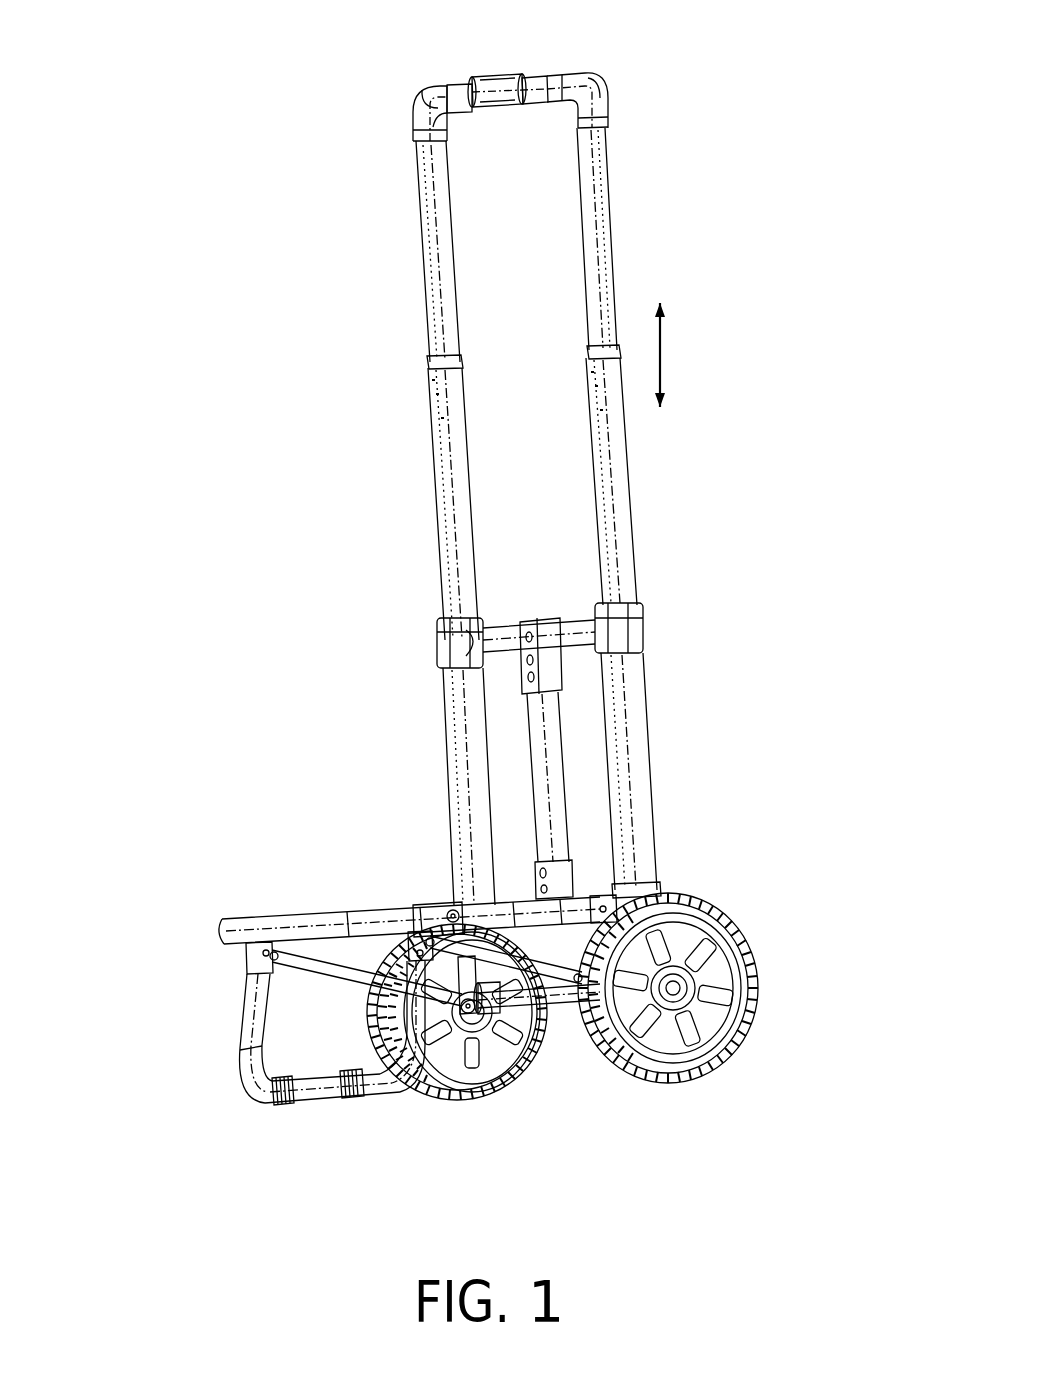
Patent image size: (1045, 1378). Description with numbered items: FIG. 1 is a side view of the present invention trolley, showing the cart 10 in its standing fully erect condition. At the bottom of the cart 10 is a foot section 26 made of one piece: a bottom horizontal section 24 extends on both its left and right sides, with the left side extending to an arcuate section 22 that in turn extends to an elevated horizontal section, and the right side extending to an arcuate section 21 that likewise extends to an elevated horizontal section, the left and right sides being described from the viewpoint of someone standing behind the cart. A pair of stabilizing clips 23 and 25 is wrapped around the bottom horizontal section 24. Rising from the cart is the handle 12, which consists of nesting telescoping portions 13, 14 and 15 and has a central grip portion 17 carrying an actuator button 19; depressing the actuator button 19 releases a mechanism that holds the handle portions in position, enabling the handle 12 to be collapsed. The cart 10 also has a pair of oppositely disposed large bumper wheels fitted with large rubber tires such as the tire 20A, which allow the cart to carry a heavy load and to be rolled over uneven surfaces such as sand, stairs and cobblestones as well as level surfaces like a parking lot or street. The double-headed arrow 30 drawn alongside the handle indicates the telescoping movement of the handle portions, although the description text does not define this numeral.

The cart 10 is at (337, 597).
The handle 12 is at (585, 350).
The telescoping portion 13 is at (653, 768).
The telescoping portion 14 is at (647, 505).
The telescoping portion 15 is at (615, 258).
The central grip portion 17 is at (592, 95).
The actuator button 19 is at (522, 72).
The large rubber tire 20A is at (712, 970).
The arcuate section 21 is at (247, 1010).
The arcuate section 22 is at (415, 1040).
The stabilizing clip 23 is at (283, 1097).
The bottom horizontal section 24 is at (325, 1098).
The stabilizing clip 25 is at (362, 1093).
The foot section 26 is at (203, 1077).
The telescoping direction 30 is at (678, 355).